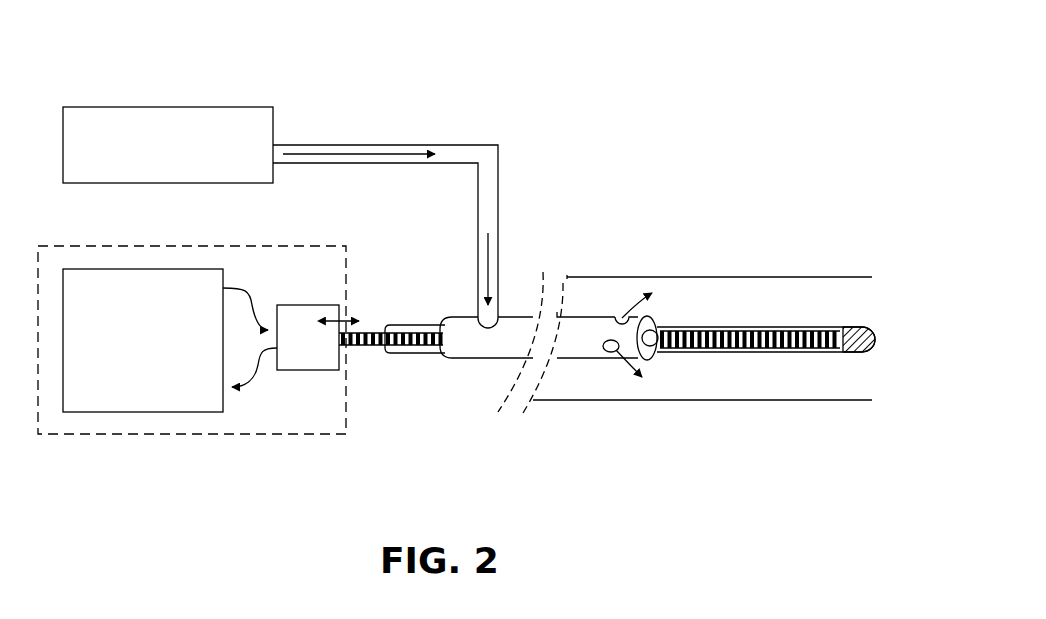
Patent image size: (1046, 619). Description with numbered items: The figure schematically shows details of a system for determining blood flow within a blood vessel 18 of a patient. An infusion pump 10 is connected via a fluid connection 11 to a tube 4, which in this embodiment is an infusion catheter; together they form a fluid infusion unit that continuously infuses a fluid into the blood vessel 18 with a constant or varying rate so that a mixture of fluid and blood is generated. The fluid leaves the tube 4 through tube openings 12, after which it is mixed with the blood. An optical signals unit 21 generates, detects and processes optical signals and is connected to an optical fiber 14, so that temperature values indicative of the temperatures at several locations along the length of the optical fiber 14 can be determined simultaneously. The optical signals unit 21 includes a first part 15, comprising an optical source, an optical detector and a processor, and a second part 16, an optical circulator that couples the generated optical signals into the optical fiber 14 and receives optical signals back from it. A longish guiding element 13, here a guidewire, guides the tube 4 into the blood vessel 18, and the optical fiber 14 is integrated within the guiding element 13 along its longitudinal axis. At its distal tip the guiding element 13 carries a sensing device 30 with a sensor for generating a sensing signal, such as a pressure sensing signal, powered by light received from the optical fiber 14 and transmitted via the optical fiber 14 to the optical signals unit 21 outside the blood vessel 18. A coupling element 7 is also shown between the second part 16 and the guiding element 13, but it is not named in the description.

The infusion pump 10 is at (152, 107).
The fluid connection 11 is at (500, 195).
The tube 4 is at (487, 358).
The tube openings 12 is at (621, 308).
The blood vessel 18 is at (788, 277).
The sensing device 30 is at (852, 327).
The optical signals unit 21 is at (72, 435).
The first part 15 is at (180, 412).
The second part 16 is at (310, 370).
The optical fiber 14 is at (353, 347).
The guiding element 13 is at (415, 353).
The coupling 7 is at (379, 319).